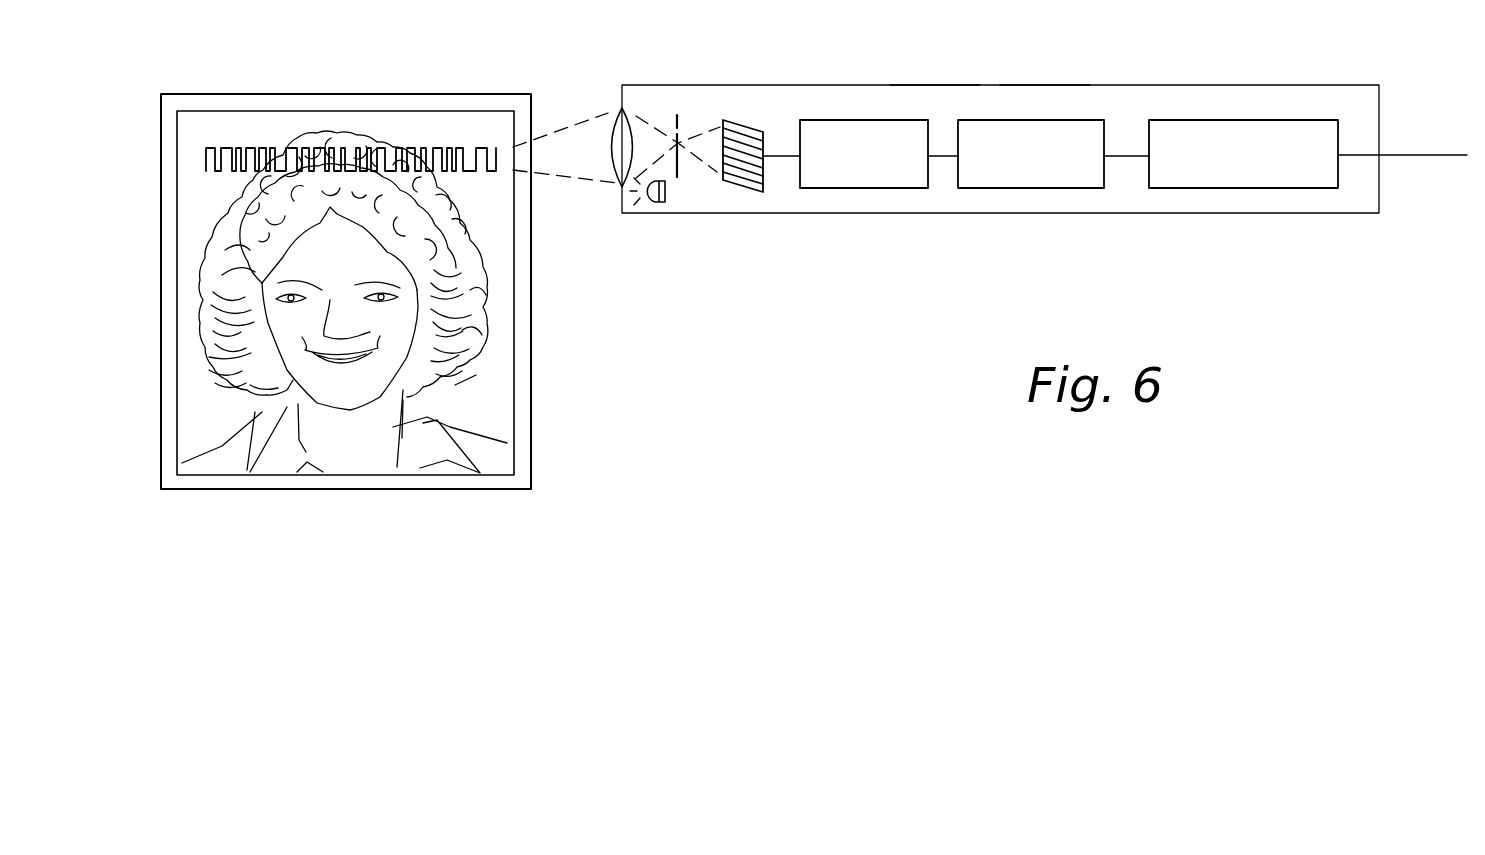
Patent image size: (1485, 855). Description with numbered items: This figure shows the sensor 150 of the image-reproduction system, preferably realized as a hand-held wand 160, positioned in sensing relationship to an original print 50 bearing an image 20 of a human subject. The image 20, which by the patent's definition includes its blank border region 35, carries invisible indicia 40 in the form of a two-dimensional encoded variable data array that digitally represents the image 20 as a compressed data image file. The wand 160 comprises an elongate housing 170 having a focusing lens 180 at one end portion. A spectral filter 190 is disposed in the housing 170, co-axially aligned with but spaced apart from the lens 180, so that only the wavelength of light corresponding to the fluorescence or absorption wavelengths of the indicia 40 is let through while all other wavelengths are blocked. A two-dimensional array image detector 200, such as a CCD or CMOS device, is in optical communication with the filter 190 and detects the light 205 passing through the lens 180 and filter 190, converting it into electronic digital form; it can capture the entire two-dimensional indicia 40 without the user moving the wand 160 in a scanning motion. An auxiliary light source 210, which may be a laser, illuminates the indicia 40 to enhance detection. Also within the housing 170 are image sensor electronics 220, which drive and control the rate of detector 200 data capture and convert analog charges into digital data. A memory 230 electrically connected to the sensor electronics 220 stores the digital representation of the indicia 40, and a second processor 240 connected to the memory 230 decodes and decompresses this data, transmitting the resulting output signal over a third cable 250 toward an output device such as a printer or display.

The image 20 is at (530, 280).
The blank border region 35 is at (528, 395).
The indicia 40 is at (242, 150).
The identification card 50 is at (532, 353).
The sensor 150 is at (1100, 84).
The hand-held wand 160 is at (1043, 84).
The elongate housing 170 is at (933, 84).
The focusing lens 180 is at (612, 118).
The spectral filter 190 is at (682, 125).
The two-dimensional array image detector 200 is at (770, 190).
The light 205 is at (566, 128).
The auxiliary light source 210 is at (665, 200).
The image sensor electronics 220 is at (900, 188).
The memory 230 is at (1038, 188).
The second processor 240 is at (1267, 188).
The third cable 250 is at (1412, 154).